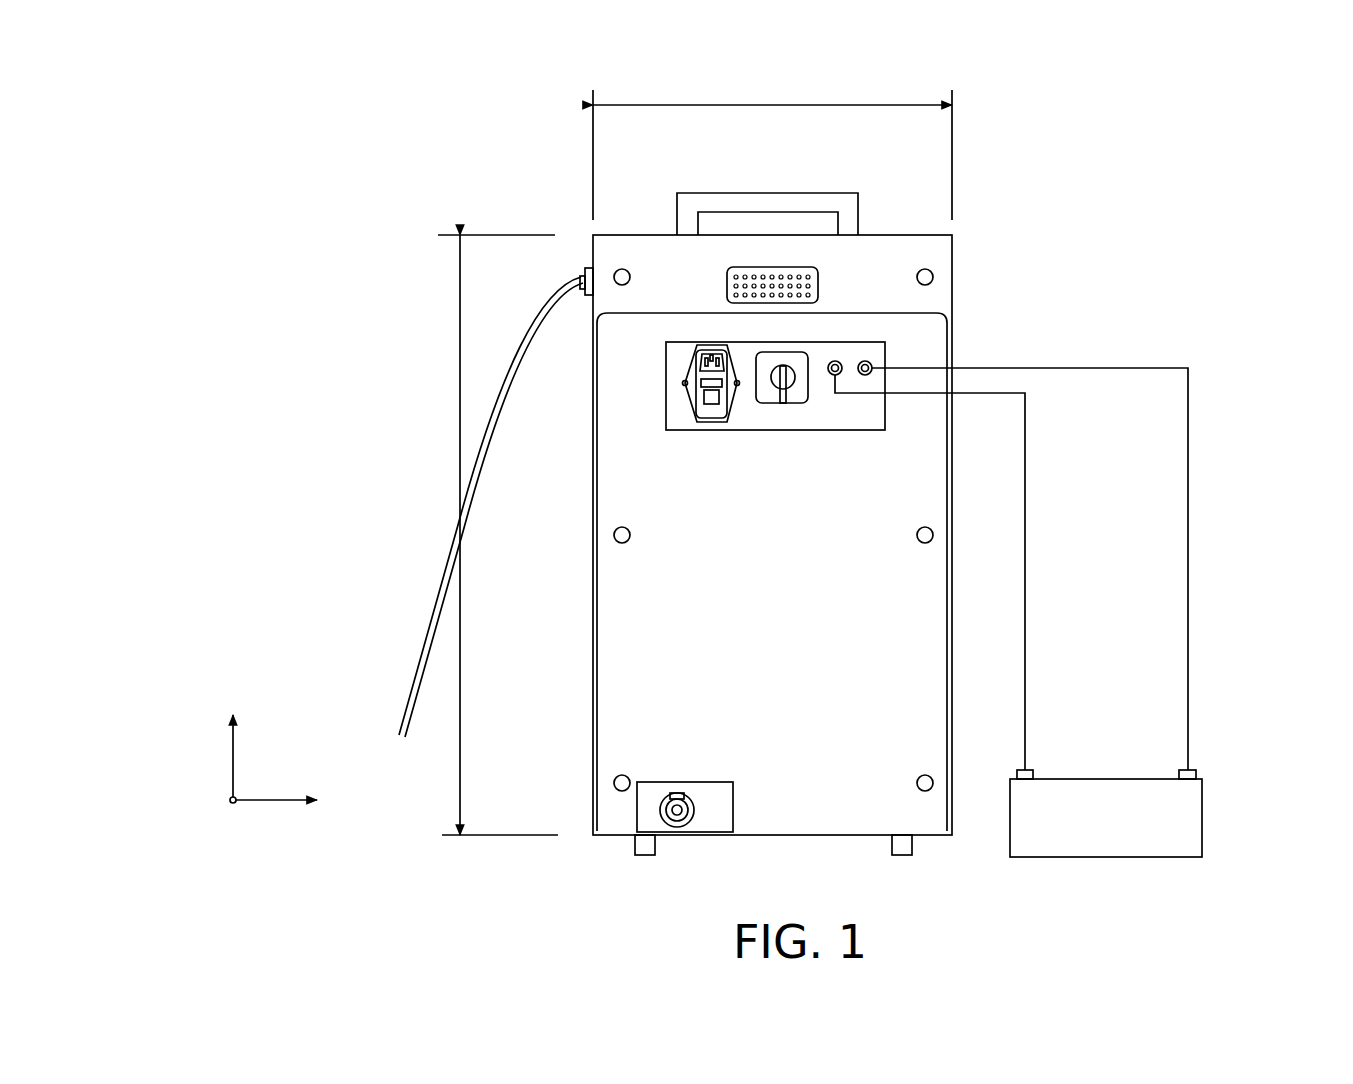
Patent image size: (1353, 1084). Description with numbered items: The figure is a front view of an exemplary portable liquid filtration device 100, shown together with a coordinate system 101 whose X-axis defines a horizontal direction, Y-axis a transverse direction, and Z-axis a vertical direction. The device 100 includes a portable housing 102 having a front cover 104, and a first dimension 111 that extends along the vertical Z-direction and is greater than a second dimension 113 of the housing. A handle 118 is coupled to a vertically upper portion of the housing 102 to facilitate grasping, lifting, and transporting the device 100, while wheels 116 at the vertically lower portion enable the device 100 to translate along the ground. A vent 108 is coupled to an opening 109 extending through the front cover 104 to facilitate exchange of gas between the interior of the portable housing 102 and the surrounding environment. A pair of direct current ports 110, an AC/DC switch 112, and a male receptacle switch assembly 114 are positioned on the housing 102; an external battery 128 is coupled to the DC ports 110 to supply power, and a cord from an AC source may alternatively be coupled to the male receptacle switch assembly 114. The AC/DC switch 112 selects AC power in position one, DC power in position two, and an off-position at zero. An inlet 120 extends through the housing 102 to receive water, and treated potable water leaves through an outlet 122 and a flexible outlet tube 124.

The portable liquid filtration device 100 is at (1143, 130).
The coordinate system 101 is at (197, 705).
The portable housing 102 is at (1170, 175).
The front cover 104 is at (933, 252).
The vent 108 is at (798, 270).
The opening 109 is at (832, 268).
The direct current (DC) ports 110 is at (842, 362).
The first dimension 111 is at (460, 432).
The AC/DC switch 112 is at (770, 402).
The second dimension 113 is at (742, 105).
The male receptacle switch assembly 114 is at (687, 390).
The wheels 116 is at (655, 855).
The handle 118 is at (677, 205).
The inlet 120 is at (663, 802).
The outlet 122 is at (583, 275).
The flexible outlet tube 124 is at (540, 322).
The external battery 128 is at (1142, 815).